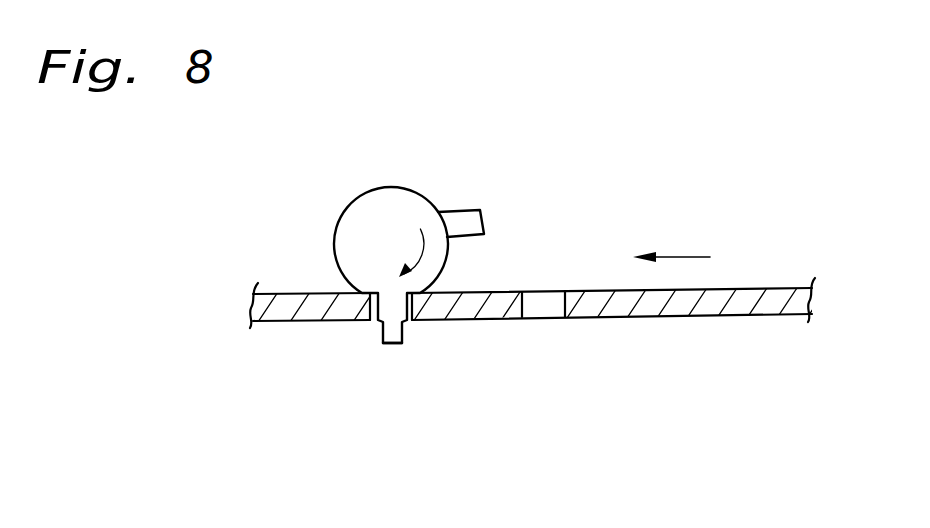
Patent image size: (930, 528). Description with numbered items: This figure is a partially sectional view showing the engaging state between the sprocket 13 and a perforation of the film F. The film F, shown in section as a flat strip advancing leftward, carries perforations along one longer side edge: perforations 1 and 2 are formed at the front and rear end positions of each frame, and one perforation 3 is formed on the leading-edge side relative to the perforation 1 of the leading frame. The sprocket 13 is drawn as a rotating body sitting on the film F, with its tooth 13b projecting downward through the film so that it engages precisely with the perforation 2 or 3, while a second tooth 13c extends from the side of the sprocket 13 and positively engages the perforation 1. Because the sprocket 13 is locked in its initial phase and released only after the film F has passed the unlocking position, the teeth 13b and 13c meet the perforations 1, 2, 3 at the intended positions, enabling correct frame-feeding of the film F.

The perforation 1 is at (547, 308).
The perforation 2 is at (382, 343).
The perforation 3 is at (360, 370).
The sprocket 13 is at (403, 188).
The tooth 13b is at (408, 344).
The tooth 13c is at (481, 210).
The film F is at (777, 288).